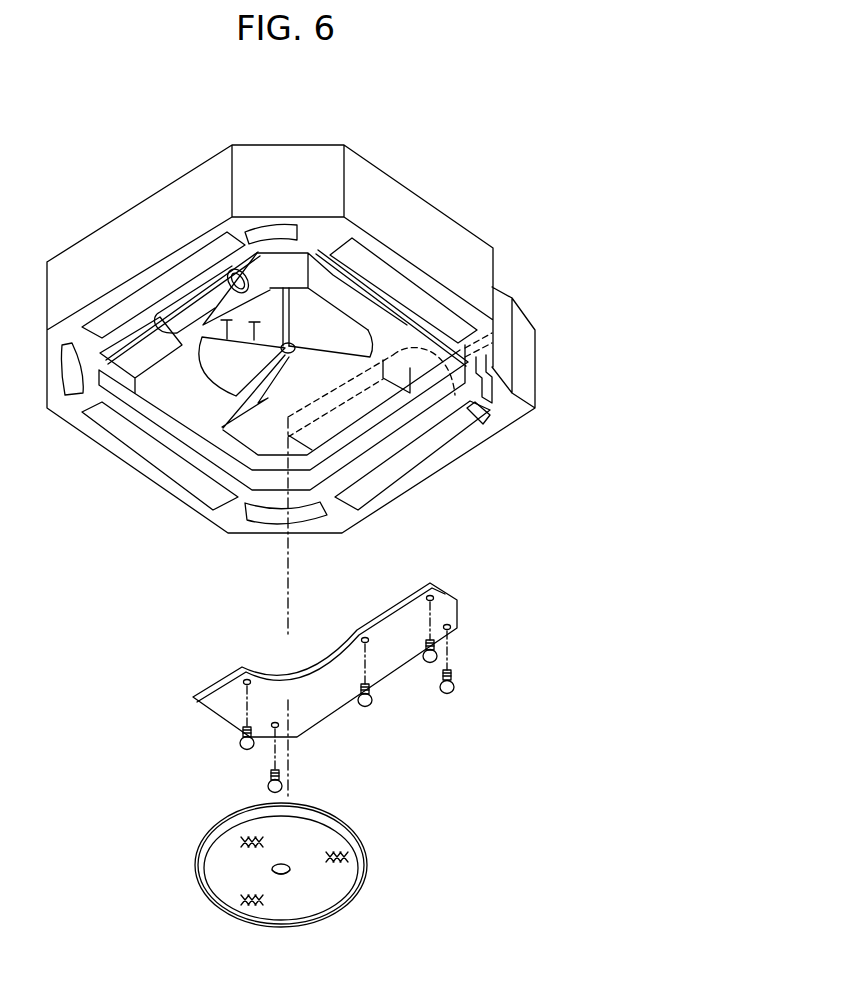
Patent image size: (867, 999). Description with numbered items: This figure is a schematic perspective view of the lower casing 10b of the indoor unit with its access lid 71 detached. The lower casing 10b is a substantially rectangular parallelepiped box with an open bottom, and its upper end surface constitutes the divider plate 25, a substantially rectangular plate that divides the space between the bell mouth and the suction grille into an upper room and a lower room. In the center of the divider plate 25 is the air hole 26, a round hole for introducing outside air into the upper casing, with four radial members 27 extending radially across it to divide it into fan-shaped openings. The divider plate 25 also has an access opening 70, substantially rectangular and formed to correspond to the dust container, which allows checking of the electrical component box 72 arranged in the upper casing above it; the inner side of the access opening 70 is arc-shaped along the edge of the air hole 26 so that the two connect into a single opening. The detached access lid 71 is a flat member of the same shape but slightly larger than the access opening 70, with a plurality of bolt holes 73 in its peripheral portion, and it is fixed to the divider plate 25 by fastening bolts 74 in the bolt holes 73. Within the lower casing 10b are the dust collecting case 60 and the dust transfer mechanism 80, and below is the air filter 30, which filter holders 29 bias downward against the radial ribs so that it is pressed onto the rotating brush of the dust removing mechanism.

The lower casing 10b is at (420, 200).
The filter holders 29 is at (240, 322).
The radial members 27 is at (262, 370).
The dust collecting case 60 is at (192, 344).
The dust transfer mechanism 80 is at (144, 382).
The divider plate 25 is at (163, 390).
The air hole 26 is at (237, 388).
The access opening 70 is at (249, 442).
The electrical component box 72 is at (455, 395).
The bolt holes 73 is at (243, 674).
The access lid 71 is at (457, 618).
The bolts 74 is at (240, 742).
The air filter 30 is at (362, 923).